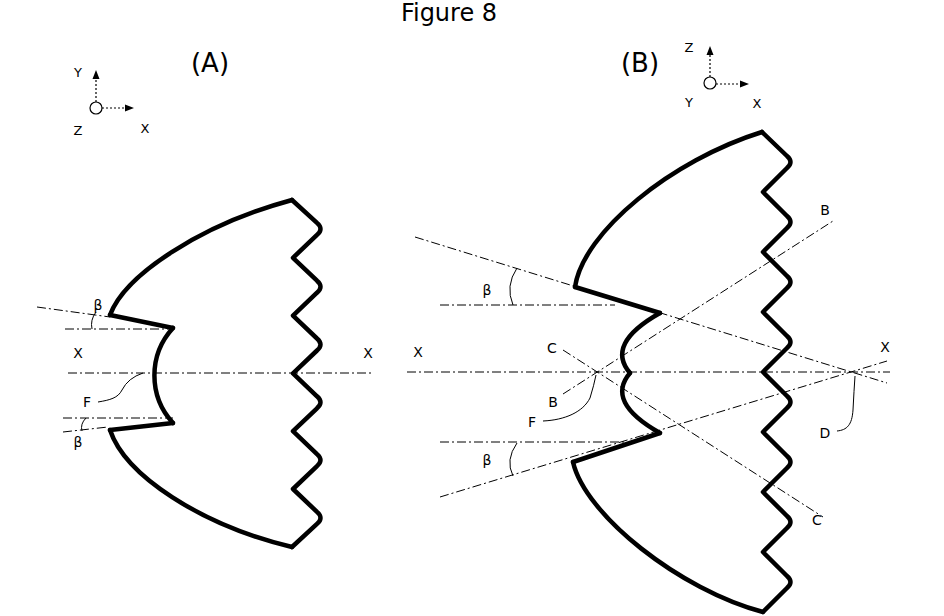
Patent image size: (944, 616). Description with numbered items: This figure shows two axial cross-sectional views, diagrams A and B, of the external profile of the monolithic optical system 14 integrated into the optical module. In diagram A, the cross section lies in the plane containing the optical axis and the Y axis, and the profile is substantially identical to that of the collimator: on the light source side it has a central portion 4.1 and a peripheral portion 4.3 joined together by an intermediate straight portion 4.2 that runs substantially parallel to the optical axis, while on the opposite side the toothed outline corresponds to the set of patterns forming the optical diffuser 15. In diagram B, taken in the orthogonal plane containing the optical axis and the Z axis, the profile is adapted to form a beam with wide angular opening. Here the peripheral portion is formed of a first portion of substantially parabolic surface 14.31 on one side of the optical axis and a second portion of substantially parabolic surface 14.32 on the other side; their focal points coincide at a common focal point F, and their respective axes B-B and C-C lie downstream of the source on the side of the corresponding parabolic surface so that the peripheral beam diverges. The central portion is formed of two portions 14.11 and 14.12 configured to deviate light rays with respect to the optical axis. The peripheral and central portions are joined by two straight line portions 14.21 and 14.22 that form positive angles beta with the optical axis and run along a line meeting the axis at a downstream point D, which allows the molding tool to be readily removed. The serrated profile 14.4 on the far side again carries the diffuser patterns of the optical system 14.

The optical system 14 is at (124, 268).
The optical diffuser 15 is at (324, 209).
The central portion 4.1 is at (177, 340).
The intermediate straight portion 4.2 is at (160, 312).
The peripheral portion 4.3 is at (212, 228).
The central portion part 14.11 is at (627, 360).
The central portion part 14.12 is at (627, 387).
The straight line portion 14.21 is at (613, 298).
The straight line portion 14.22 is at (603, 457).
The first portion of substantially parabolic surface 14.31 is at (645, 190).
The second portion of substantially parabolic surface 14.32 is at (600, 518).
The serrated light exit surface 14.4 is at (758, 150).